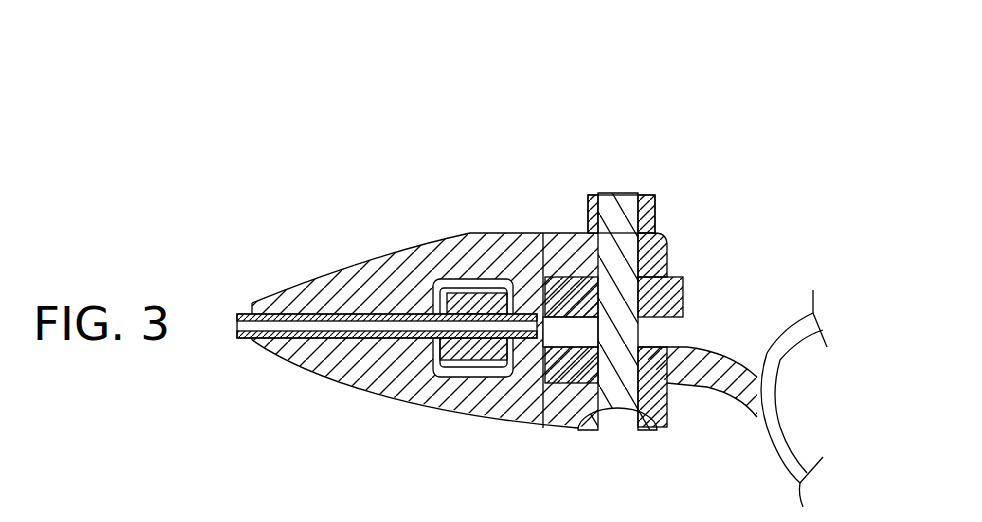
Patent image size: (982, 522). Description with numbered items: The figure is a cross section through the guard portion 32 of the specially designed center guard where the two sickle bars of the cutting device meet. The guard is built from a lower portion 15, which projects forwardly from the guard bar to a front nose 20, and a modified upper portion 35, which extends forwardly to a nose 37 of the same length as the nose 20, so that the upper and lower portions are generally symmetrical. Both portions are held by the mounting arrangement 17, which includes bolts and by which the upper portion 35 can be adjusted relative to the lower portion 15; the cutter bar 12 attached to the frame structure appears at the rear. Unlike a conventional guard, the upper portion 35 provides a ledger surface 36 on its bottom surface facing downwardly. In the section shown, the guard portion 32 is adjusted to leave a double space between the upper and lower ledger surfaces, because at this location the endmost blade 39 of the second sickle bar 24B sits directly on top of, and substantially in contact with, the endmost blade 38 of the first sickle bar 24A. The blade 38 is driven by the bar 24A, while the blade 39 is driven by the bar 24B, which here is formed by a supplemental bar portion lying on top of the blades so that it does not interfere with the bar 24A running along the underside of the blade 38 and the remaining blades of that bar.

The cutter bar 12 is at (778, 330).
The lower portion 15 is at (390, 372).
The mounting arrangement 17 is at (691, 217).
The front nose 20 is at (293, 365).
The first sickle bar 24A is at (493, 377).
The second sickle bar 24B is at (541, 233).
The guard portion 32 is at (488, 82).
The upper portion 35 is at (392, 263).
The ledger surface 36 is at (297, 290).
The nose 37 is at (255, 302).
The endmost blade 38 is at (428, 342).
The endmost blade 39 is at (468, 300).